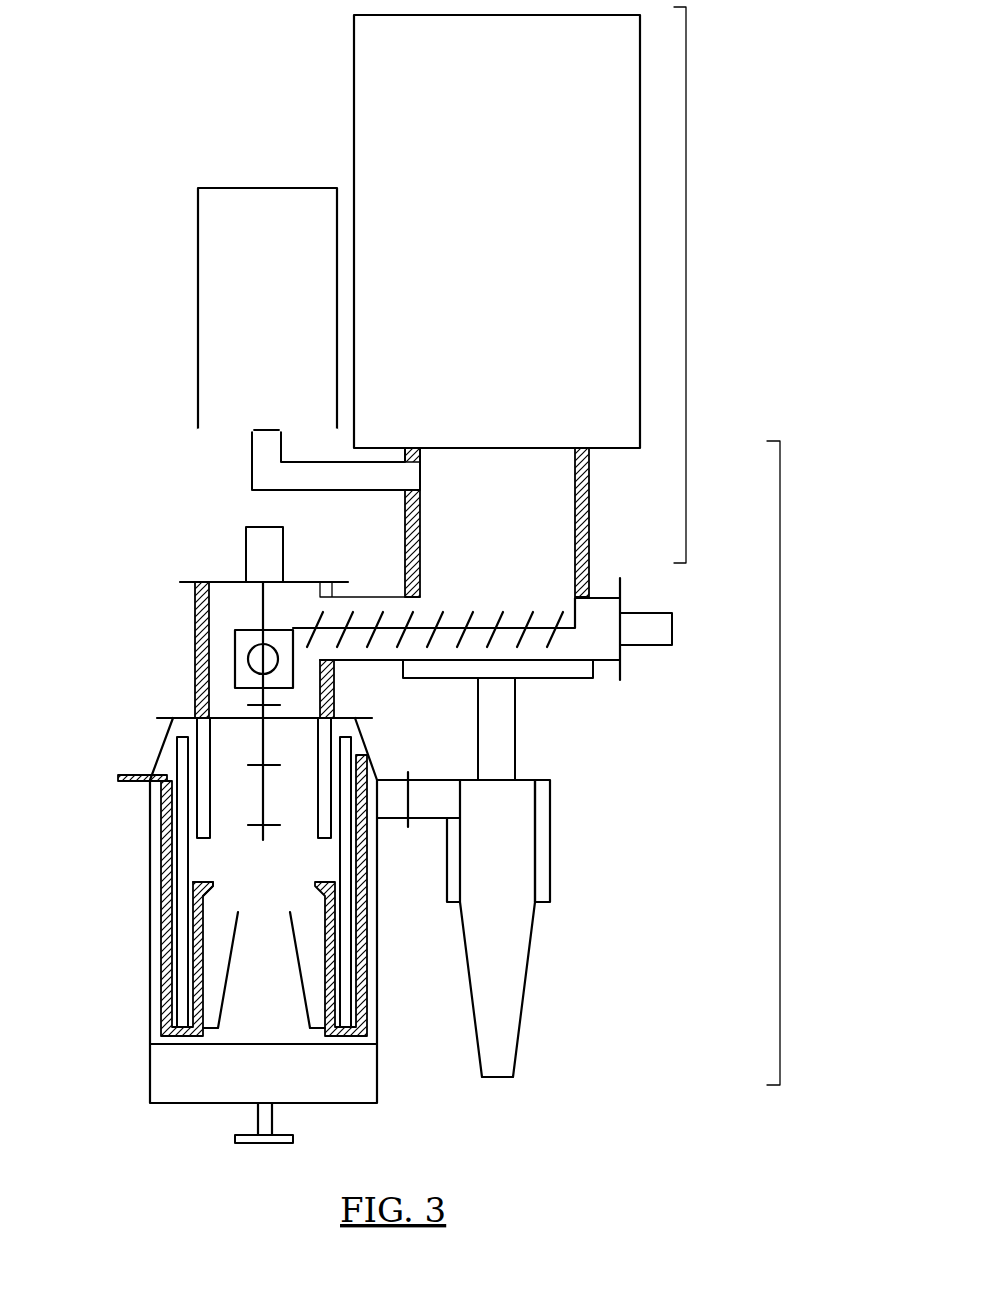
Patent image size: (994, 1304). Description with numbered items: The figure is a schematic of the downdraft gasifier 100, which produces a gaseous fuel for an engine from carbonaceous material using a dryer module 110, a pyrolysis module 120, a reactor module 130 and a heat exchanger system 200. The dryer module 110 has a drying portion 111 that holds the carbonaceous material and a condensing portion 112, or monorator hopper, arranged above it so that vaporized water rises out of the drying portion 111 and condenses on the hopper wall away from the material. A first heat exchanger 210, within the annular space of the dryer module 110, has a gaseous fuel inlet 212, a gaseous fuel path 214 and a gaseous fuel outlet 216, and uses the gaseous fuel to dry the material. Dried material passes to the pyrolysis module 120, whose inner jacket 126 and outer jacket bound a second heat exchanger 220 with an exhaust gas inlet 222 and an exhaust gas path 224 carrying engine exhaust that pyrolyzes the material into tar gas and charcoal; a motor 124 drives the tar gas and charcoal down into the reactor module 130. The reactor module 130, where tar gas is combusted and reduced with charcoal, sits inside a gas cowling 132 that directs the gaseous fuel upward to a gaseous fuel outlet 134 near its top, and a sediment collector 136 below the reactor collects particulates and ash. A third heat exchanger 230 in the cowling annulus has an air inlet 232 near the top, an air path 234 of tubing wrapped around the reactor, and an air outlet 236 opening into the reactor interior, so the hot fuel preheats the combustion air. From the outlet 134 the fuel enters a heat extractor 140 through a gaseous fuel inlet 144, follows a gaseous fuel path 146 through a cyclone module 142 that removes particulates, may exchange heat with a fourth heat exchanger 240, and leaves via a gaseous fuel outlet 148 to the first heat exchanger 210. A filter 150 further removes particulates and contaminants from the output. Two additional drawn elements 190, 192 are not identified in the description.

The downdraft gasifier 100 is at (175, 108).
The dryer module 110 is at (686, 285).
The drying portion 111 is at (462, 502).
The condensing portion 112 is at (497, 231).
The pyrolysis module 120 is at (433, 624).
The motor 124 is at (246, 540).
The inner jacket 126 is at (253, 828).
The reactor module 130 is at (264, 951).
The gas cowling 132 is at (150, 1085).
The gaseous fuel outlet 134 is at (387, 820).
The sediment collector 136 is at (330, 1045).
The heat extractor 140 is at (541, 928).
The cyclone module 142 is at (528, 970).
The gaseous fuel inlet 144 is at (428, 820).
The gaseous fuel path 146 is at (510, 815).
The gaseous fuel outlet 148 is at (515, 715).
The filter 150 is at (267, 309).
The flange 190 is at (577, 625).
The screw drive 192 is at (680, 630).
The heat exchanger system 200 is at (780, 768).
The first heat exchanger 210 is at (583, 530).
The gaseous fuel inlet 212 is at (568, 668).
The gaseous fuel path 214 is at (582, 490).
The gaseous fuel outlet 216 is at (399, 480).
The second heat exchanger 220 is at (197, 630).
The exhaust gas inlet 222 is at (235, 670).
The exhaust gas path 224 is at (197, 612).
The third heat exchanger 230 is at (172, 1010).
The air inlet 232 is at (122, 772).
The air path 234 is at (353, 1045).
The air outlet 236 is at (213, 885).
The fourth heat exchanger 240 is at (550, 848).